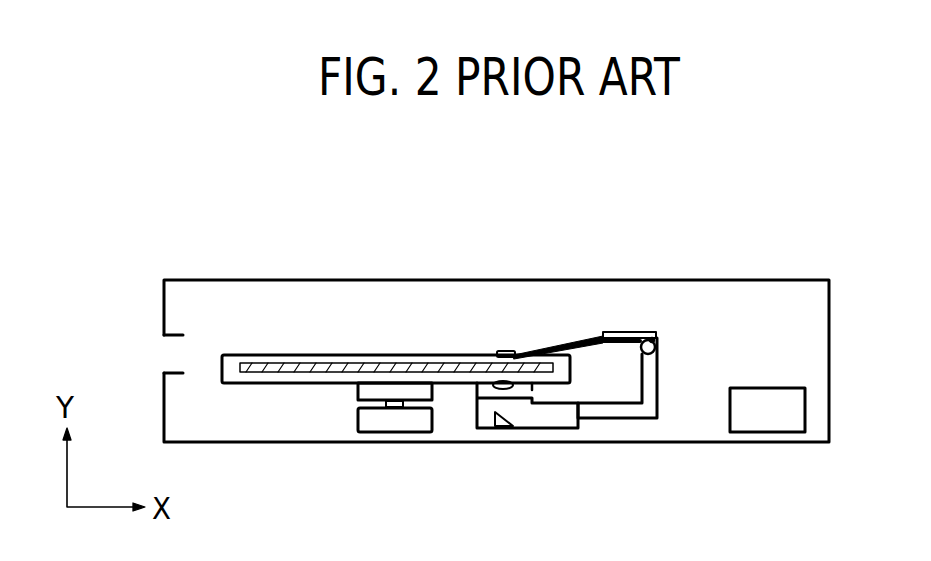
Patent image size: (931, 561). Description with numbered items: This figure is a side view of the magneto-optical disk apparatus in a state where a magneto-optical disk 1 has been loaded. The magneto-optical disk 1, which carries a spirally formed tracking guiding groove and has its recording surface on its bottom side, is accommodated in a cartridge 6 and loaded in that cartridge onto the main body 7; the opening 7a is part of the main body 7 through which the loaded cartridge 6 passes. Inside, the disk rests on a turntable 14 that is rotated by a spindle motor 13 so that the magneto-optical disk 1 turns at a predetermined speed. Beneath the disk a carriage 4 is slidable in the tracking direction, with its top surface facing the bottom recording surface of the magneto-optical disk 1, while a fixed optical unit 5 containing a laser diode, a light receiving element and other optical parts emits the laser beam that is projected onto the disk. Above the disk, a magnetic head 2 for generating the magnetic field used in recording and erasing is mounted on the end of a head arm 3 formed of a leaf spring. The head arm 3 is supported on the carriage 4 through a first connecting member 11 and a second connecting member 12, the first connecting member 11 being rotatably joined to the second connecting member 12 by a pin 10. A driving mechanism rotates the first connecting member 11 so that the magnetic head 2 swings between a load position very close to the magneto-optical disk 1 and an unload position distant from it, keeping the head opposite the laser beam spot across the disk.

The magneto-optical disk 1 is at (400, 368).
The magnetic head 2 is at (505, 351).
The head arm 3 is at (558, 345).
The carriage 4 is at (563, 417).
The fixed optical unit 5 is at (768, 413).
The cartridge 6 is at (315, 355).
The main body 7 is at (270, 428).
The housing opening 7a is at (178, 325).
The pin 10 is at (655, 337).
The first connecting member 11 is at (635, 332).
The second connecting member 12 is at (643, 410).
The spindle motor 13 is at (412, 420).
The turntable 14 is at (381, 387).